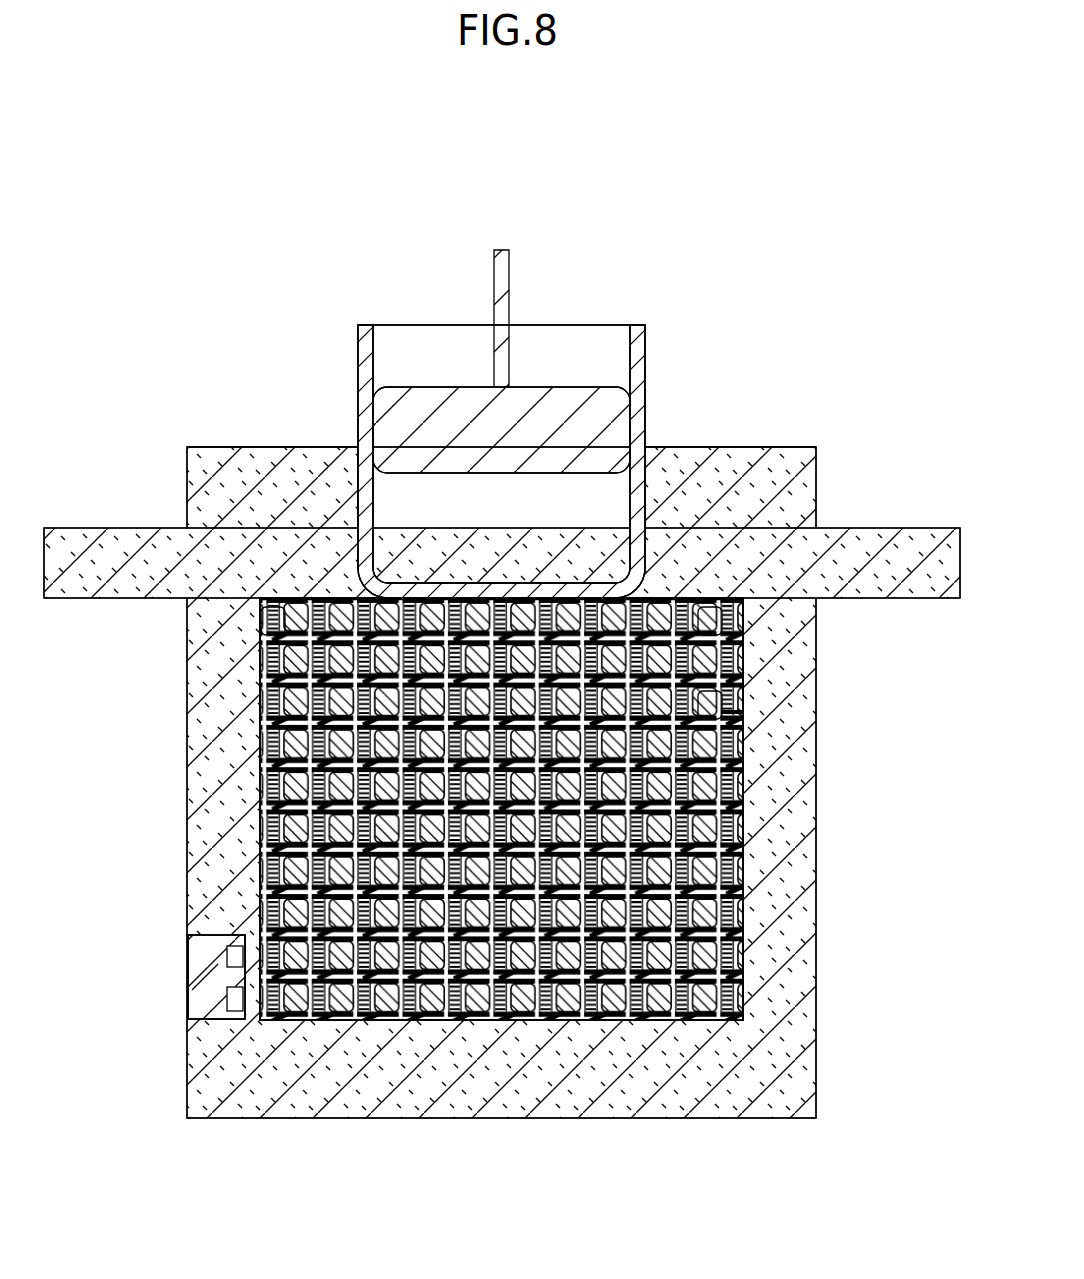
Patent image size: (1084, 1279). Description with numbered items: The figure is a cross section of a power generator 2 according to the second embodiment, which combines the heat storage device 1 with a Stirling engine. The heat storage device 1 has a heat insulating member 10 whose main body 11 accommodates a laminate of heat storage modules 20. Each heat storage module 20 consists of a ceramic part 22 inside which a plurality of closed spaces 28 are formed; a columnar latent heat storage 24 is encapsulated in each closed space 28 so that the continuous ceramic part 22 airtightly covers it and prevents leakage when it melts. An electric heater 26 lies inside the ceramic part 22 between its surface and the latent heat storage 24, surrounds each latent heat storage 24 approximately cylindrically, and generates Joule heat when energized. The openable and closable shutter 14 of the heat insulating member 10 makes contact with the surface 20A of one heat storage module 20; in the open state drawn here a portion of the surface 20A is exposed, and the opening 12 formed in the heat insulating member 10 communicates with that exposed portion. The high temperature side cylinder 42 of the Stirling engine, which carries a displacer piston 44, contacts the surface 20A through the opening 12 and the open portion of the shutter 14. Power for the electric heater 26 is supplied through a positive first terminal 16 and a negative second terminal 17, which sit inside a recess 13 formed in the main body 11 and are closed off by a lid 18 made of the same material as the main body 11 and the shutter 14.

The heat storage device 1 is at (212, 392).
The power generator 2 is at (887, 212).
The heat insulating member 10 is at (275, 1136).
The main body 11 is at (272, 447).
The opening 12 is at (638, 455).
The recess 13 is at (230, 1016).
The shutter 14 is at (103, 528).
The first terminal 16 is at (238, 955).
The second terminal 17 is at (235, 997).
The lid 18 is at (207, 977).
The heat storage module 20 is at (765, 790).
The surface 20A is at (590, 598).
The ceramic part 22 is at (725, 702).
The latent heat storage 24 is at (713, 690).
The electric heater 26 is at (742, 714).
The closed space 28 is at (268, 703).
The high temperature side cylinder 42 is at (740, 336).
The displacer piston 44 is at (503, 267).